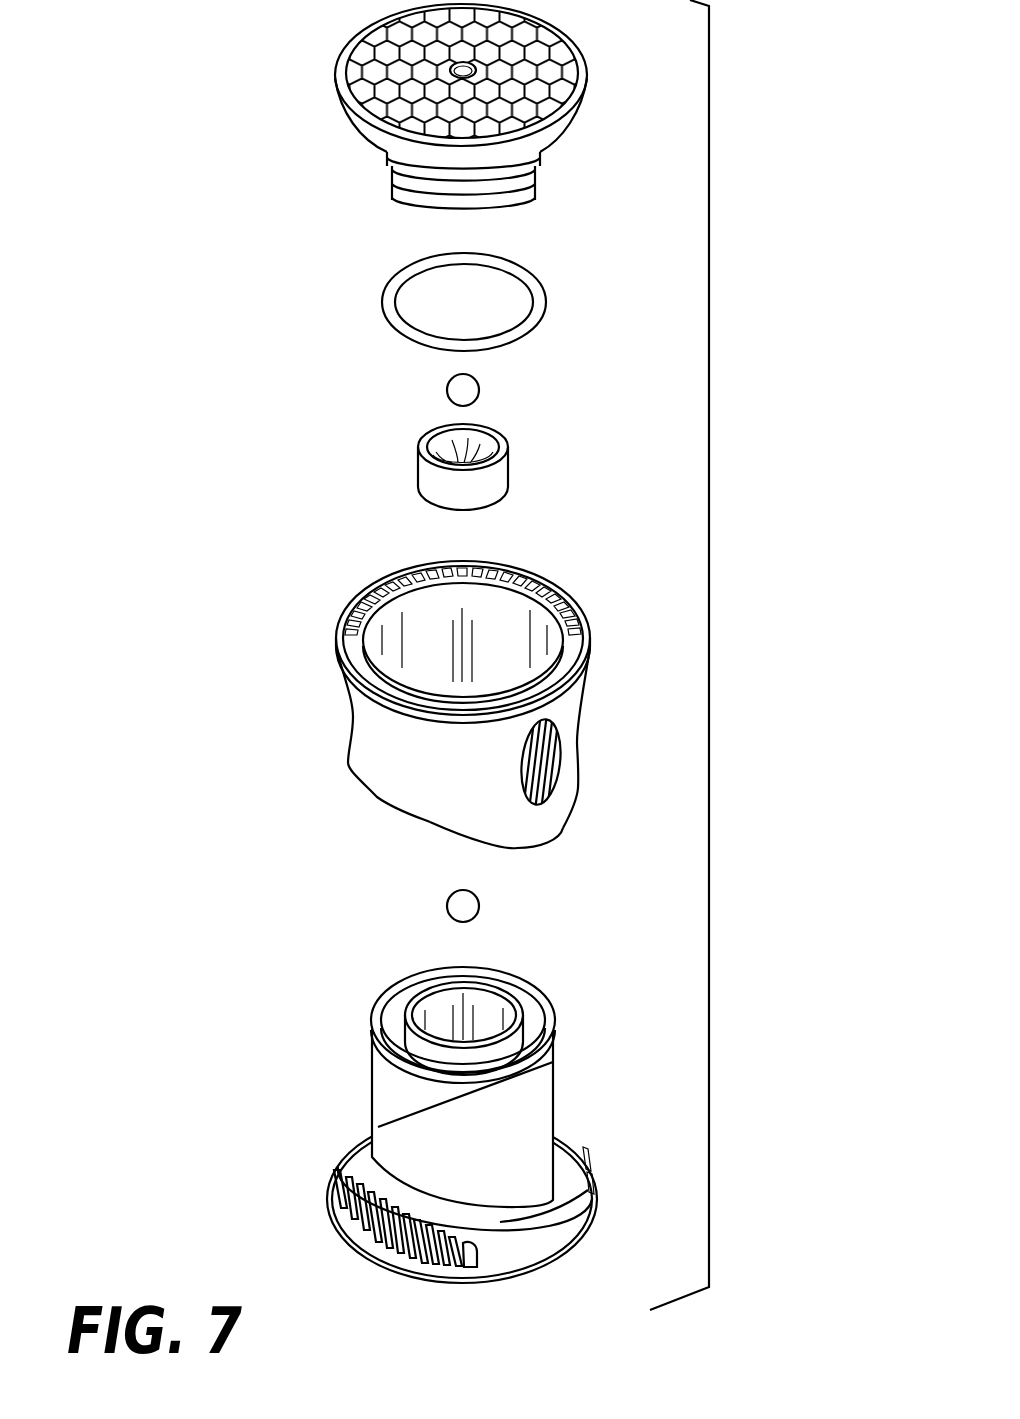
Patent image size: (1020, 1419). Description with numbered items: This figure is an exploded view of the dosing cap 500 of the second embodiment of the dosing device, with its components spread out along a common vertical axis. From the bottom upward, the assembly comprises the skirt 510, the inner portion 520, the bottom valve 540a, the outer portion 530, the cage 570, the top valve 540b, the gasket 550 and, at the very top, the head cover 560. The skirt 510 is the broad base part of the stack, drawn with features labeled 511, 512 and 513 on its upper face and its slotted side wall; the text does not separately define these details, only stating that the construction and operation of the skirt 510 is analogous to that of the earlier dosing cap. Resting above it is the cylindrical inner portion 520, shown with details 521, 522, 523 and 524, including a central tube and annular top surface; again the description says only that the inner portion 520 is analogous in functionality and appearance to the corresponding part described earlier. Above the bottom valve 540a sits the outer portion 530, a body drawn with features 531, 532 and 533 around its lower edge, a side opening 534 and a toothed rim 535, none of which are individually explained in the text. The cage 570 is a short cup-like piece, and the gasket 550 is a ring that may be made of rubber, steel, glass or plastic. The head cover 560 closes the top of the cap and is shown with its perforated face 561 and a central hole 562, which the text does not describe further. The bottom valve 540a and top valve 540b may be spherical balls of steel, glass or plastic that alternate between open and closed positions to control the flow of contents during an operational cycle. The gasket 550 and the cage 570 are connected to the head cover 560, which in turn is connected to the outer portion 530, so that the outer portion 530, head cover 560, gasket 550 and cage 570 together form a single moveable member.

The dosing cap 500 is at (709, 688).
The skirt 510 is at (291, 1244).
The top face of base 511 is at (373, 1160).
The rim of base 512 is at (520, 1223).
The vent slots 513 is at (387, 1258).
The inner portion 520 is at (344, 1111).
The housing bottom edge 521 is at (533, 1205).
The housing side wall 522 is at (537, 1123).
The inner tube 523 is at (532, 1012).
The annular top surface 524 is at (403, 1040).
The outer portion 530 is at (291, 711).
The body lower portion 531 is at (562, 830).
The body bottom edge 532 is at (427, 823).
The body lower left edge 533 is at (377, 797).
The vent opening 534 is at (560, 750).
The toothed rim 535 is at (340, 613).
The bottom valve 540a is at (500, 906).
The top valve 540b is at (524, 390).
The gasket 550 is at (584, 284).
The head cover 560 is at (291, 107).
The honeycomb face 561 is at (560, 68).
The central hole 562 is at (480, 72).
The cage 570 is at (556, 470).